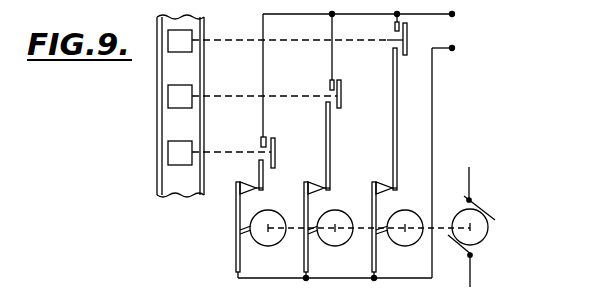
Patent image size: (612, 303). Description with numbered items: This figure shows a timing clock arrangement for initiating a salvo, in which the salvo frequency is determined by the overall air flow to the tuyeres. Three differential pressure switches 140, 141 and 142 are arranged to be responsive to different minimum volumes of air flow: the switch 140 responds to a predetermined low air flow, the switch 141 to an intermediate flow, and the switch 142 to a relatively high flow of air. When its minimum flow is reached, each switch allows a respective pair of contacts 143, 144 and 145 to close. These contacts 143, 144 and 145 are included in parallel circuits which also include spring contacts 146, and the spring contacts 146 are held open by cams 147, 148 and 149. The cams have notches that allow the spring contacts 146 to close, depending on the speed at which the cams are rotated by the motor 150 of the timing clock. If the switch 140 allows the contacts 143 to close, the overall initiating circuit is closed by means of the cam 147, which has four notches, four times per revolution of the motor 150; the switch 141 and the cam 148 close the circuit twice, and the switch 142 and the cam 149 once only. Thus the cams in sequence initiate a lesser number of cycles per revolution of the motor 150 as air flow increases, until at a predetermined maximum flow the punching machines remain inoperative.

The differential pressure switch 140 is at (172, 153).
The differential pressure switch 141 is at (172, 100).
The differential pressure switch 142 is at (180, 46).
The pair of contacts 143 is at (275, 153).
The pair of contacts 144 is at (341, 100).
The pair of contacts 145 is at (408, 45).
The spring contacts 146 is at (242, 184).
The cam 147 is at (260, 238).
The cam 148 is at (337, 231).
The cam 149 is at (407, 231).
The motor 150 is at (461, 211).